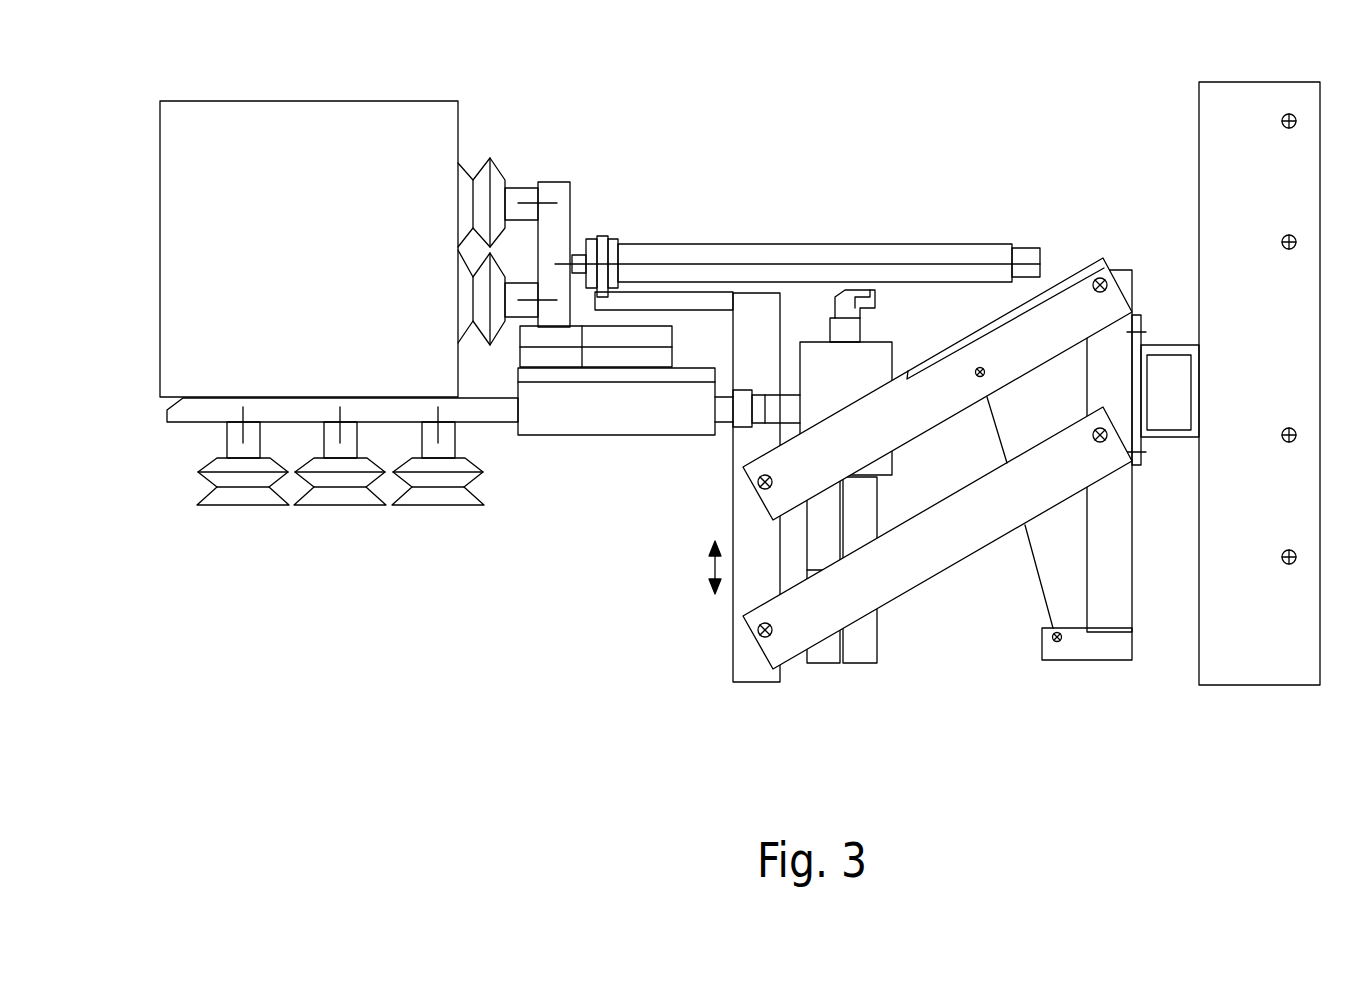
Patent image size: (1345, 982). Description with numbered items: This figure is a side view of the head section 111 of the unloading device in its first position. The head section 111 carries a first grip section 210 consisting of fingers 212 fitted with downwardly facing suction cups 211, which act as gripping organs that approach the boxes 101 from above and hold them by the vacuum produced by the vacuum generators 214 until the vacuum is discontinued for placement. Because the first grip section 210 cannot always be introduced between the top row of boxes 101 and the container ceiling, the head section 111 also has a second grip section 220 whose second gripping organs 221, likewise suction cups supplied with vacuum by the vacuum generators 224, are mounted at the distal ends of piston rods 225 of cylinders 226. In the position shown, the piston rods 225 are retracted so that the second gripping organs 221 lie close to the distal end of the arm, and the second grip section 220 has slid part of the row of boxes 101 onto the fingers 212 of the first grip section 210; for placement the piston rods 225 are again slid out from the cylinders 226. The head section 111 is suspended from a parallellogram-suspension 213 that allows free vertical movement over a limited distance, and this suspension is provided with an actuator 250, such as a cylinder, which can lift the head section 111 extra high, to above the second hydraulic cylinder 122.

The boxes 101 is at (354, 118).
The head section 111 is at (953, 164).
The second hydraulic cylinder 122 is at (1222, 122).
The first grip section 210 is at (380, 485).
The downwardly facing suction cups 211 is at (422, 498).
The fingers 212 is at (182, 410).
The parallellogram-suspension 213 is at (945, 538).
The vacuum generators 214 is at (827, 357).
The second grip section 220 is at (529, 200).
The second gripping organs 221 is at (497, 180).
The vacuum generators 224 is at (610, 358).
The piston rods 225 is at (580, 255).
The cylinders 226 is at (733, 255).
The actuator 250 is at (1027, 568).